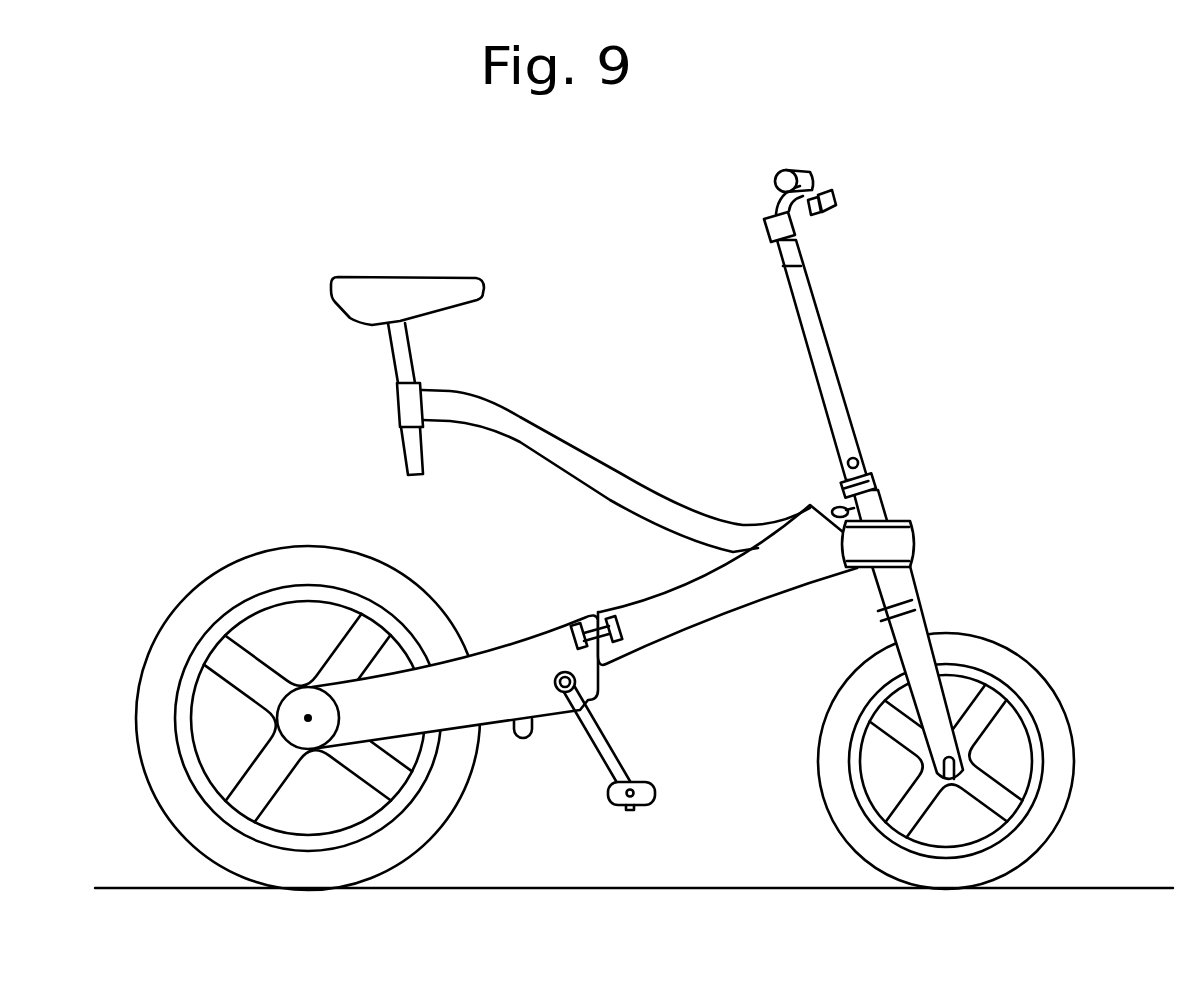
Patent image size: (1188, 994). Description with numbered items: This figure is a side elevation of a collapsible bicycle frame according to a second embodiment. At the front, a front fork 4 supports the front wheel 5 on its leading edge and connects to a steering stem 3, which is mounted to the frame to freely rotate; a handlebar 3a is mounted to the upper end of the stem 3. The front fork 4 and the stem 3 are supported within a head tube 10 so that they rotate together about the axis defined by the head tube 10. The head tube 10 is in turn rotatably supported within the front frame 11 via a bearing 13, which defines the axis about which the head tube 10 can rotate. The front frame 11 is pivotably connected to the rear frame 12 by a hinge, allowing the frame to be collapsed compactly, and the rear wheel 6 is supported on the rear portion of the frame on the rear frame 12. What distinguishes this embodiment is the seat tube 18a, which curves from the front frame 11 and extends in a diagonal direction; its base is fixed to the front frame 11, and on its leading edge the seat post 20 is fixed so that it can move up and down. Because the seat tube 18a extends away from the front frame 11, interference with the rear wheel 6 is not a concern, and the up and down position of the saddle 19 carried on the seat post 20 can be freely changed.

The steering stem 3 is at (832, 390).
The handlebar 3a is at (815, 187).
The front fork 4 is at (913, 640).
The front wheel 5 is at (1063, 787).
The rear wheel 6 is at (423, 833).
The head tube 10 is at (873, 502).
The front frame 11 is at (729, 598).
The rear frame 12 is at (498, 713).
The bearing 13 is at (922, 543).
The seat tube 18a is at (625, 482).
The saddle 19 is at (463, 288).
The seat post 20 is at (405, 355).